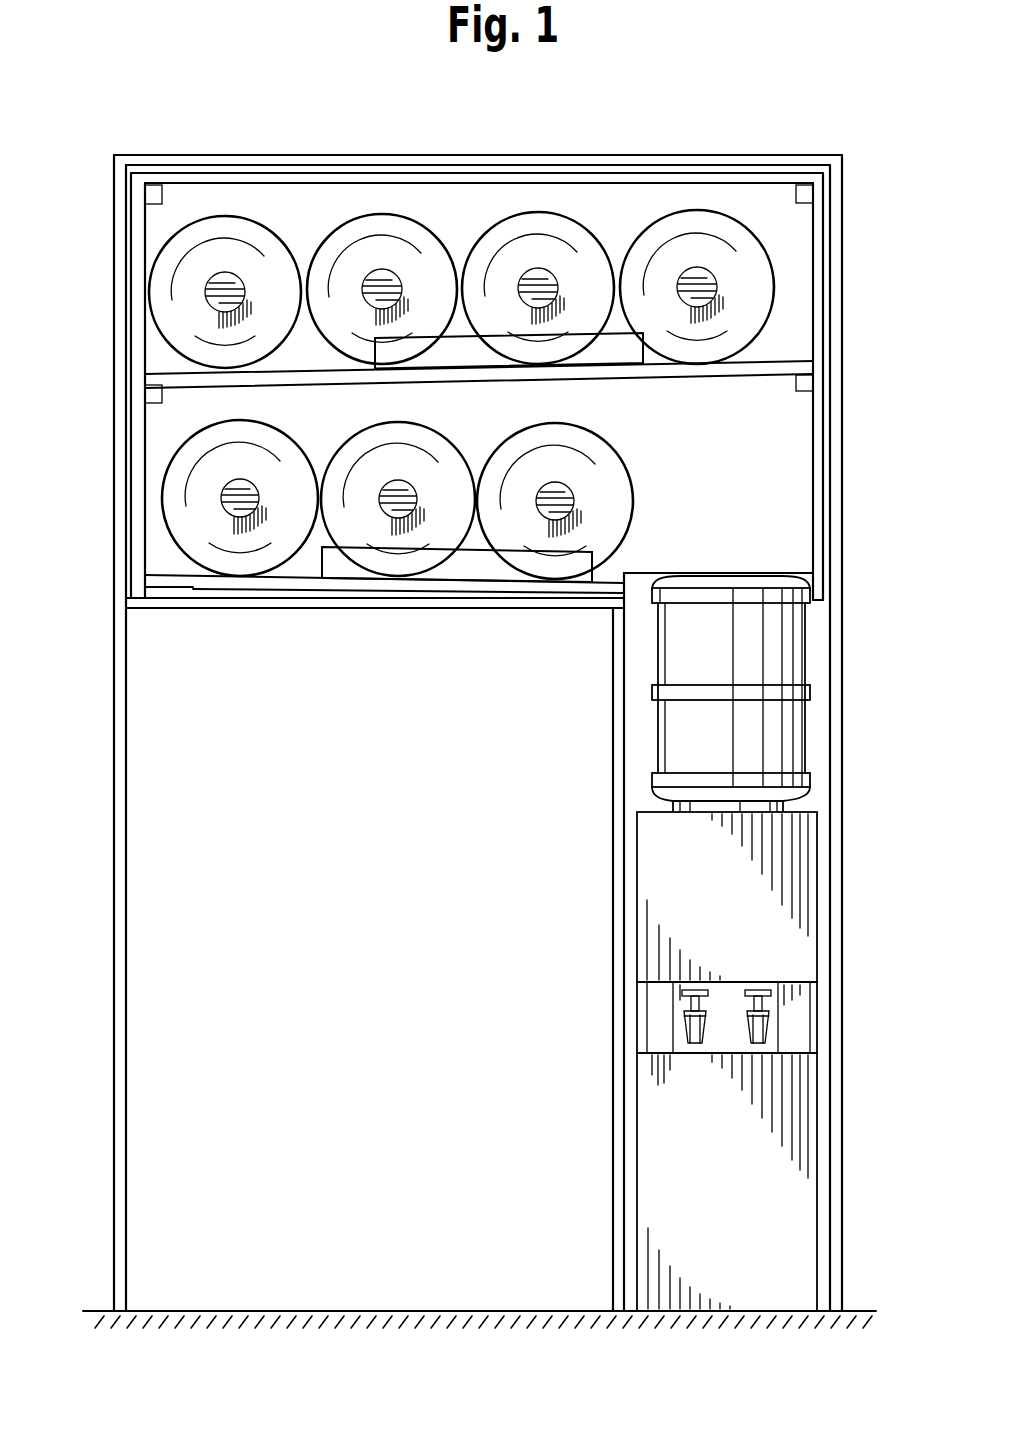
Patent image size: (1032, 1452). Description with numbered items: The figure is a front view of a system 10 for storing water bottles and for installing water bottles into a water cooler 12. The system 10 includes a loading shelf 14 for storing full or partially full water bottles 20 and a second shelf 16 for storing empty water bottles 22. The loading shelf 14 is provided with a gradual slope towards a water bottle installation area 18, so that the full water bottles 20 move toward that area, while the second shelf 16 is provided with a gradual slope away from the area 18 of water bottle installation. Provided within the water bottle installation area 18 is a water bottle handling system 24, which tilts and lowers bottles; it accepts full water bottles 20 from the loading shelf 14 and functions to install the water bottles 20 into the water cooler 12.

The system 10 is at (852, 492).
The water cooler 12 is at (824, 1085).
The loading shelf 14 is at (155, 557).
The second shelf 16 is at (155, 358).
The water bottle installation area 18 is at (710, 478).
The water bottles 20 is at (233, 432).
The empty water bottles 22 is at (238, 230).
The water bottle handling system 24 is at (822, 722).